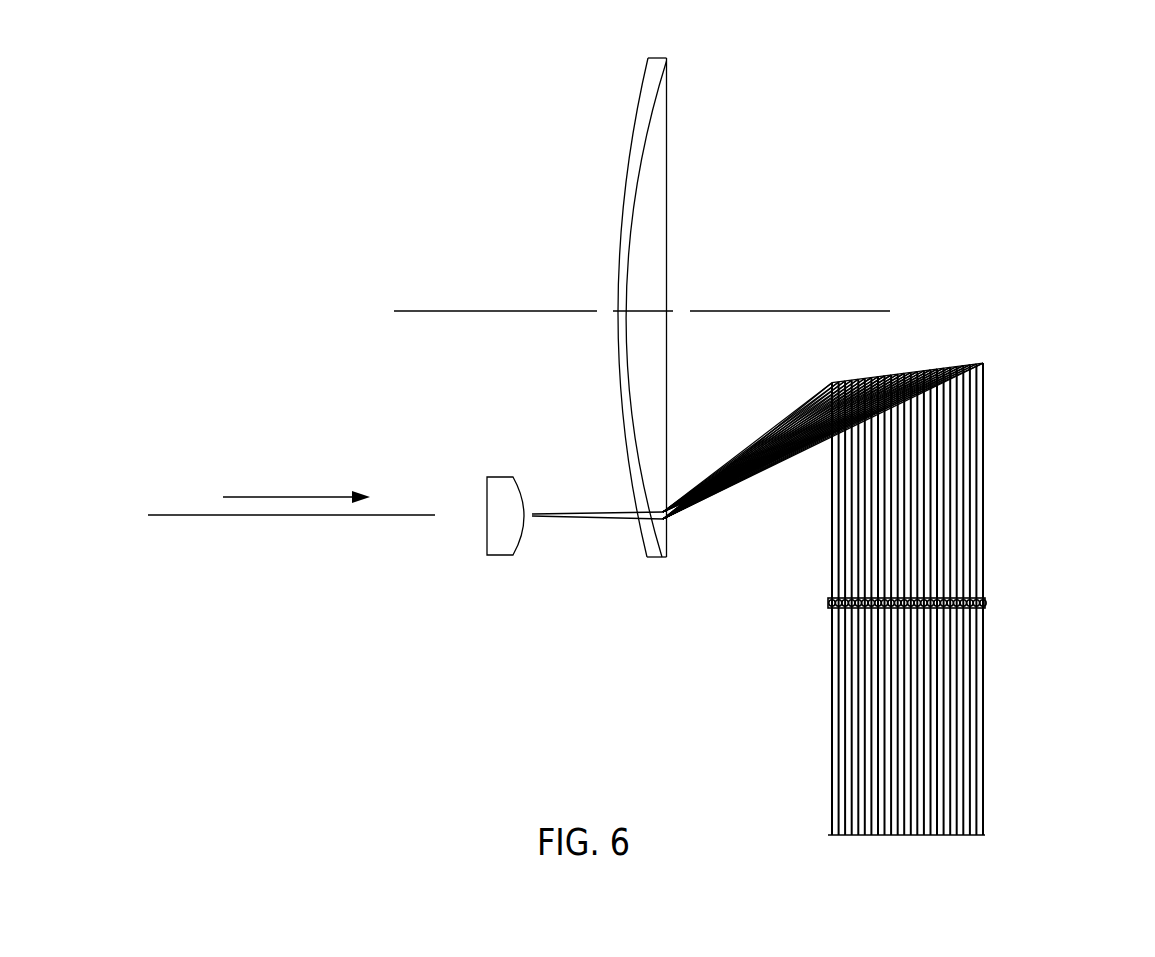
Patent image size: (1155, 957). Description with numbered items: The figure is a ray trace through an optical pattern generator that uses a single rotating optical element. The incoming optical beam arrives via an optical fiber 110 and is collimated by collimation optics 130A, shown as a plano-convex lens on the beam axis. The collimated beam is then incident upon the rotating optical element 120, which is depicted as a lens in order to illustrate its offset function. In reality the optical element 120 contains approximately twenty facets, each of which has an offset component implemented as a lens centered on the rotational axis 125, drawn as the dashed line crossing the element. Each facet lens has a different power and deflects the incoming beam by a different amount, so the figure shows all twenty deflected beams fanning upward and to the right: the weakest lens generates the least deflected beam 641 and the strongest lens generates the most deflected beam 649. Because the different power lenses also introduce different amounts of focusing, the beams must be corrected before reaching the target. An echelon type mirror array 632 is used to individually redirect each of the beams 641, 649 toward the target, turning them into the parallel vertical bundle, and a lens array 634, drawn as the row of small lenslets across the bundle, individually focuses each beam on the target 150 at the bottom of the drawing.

The optical fiber 110 is at (435, 515).
The collimation optics 130A is at (500, 556).
The rotating optical element 120 is at (663, 533).
The rotational axis 125 is at (662, 314).
The most deflected beam 649 is at (770, 432).
The least deflected beam 641 is at (782, 466).
The echelon type mirror array 632 is at (1000, 364).
The lens array 634 is at (1000, 603).
The target 150 is at (1000, 834).